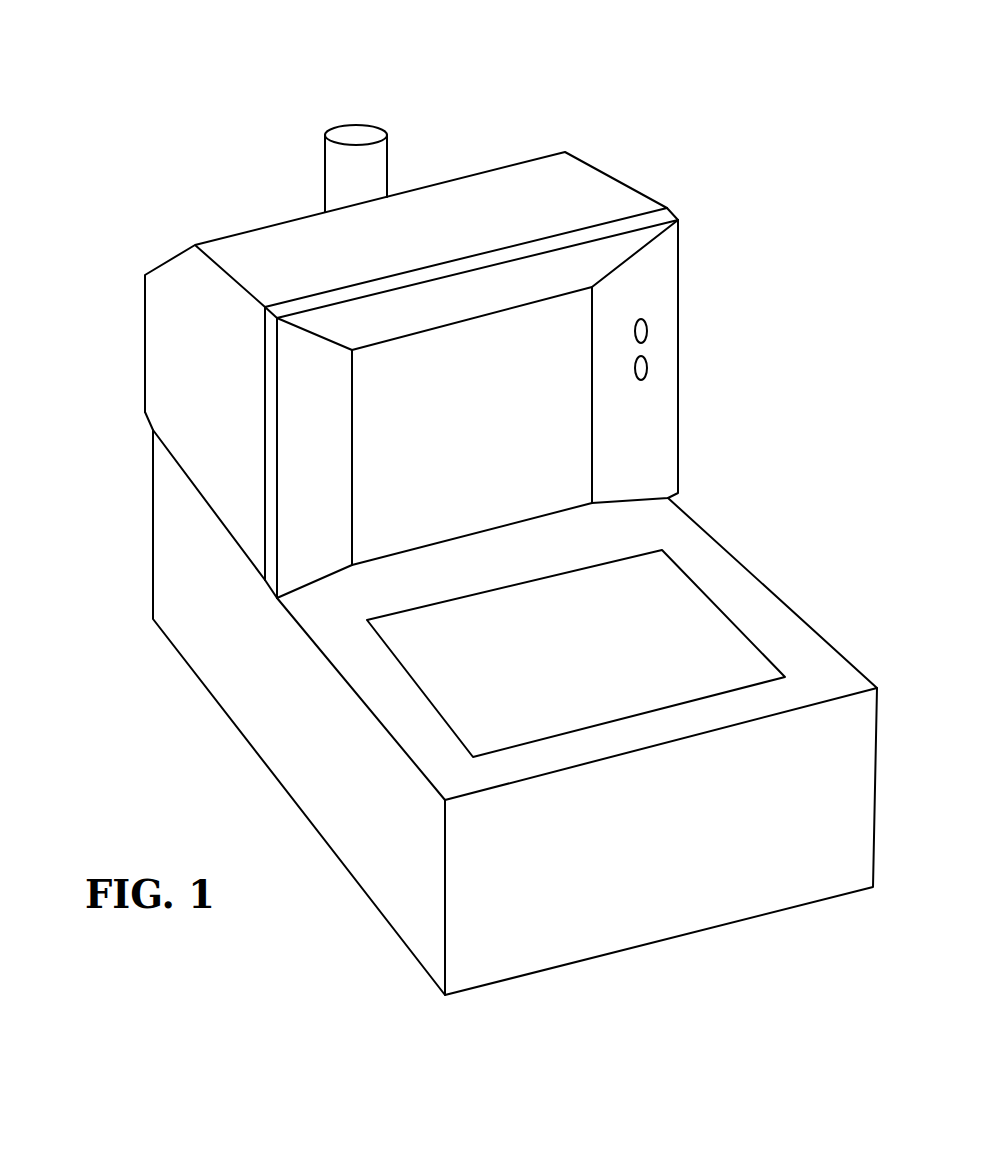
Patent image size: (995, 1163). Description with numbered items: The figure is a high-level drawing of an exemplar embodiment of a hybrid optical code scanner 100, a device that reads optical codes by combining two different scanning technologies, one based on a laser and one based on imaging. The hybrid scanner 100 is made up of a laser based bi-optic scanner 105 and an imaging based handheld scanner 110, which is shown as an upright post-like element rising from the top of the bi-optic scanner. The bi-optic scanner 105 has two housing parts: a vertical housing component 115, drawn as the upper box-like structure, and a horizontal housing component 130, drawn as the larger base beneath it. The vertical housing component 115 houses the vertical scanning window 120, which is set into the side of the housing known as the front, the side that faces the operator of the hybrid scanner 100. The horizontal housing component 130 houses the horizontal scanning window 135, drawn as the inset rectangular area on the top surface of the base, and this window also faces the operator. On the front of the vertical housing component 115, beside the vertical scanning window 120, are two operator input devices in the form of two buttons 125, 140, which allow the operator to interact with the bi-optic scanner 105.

The hybrid optical code scanner 100 is at (133, 56).
The laser based bi-optic scanner 105 is at (170, 560).
The imaging based handheld scanner 110 is at (378, 167).
The vertical housing component 115 is at (583, 187).
The vertical scanning window 120 is at (557, 330).
The button 125 is at (647, 331).
The horizontal housing component 130 is at (730, 580).
The horizontal scanning window 135 is at (740, 653).
The button 140 is at (647, 369).